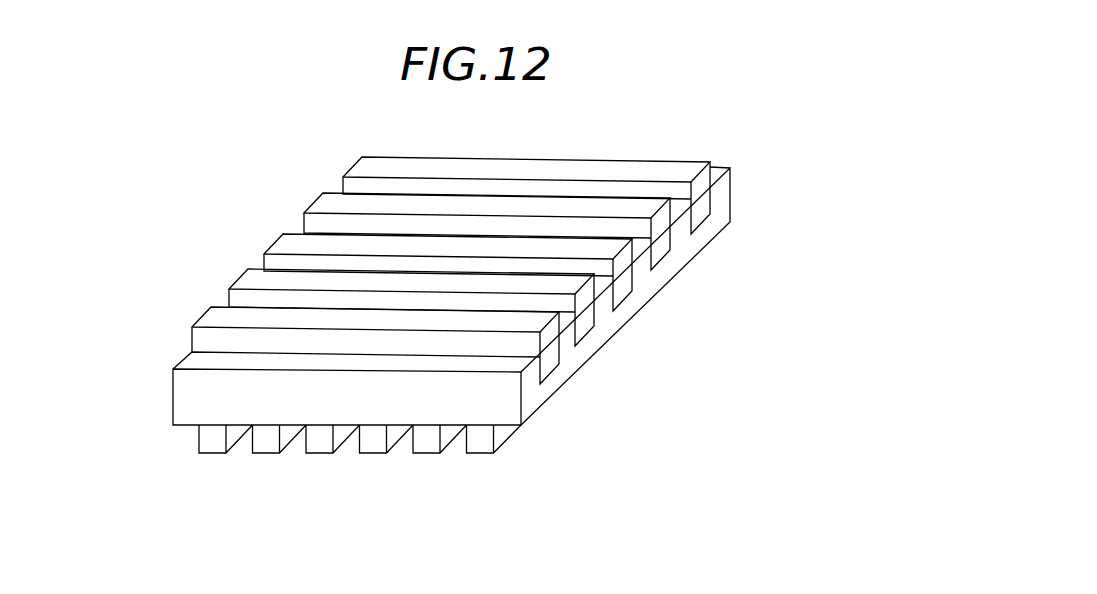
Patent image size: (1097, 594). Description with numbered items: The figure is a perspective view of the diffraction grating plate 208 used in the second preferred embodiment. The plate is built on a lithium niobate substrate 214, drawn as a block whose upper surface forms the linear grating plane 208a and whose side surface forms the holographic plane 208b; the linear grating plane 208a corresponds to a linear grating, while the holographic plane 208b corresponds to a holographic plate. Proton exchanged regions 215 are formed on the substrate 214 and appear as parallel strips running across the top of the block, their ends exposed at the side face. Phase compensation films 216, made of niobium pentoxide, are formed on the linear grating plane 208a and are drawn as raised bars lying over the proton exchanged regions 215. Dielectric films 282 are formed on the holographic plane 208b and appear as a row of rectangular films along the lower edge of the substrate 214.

The diffraction grating plate 208 is at (312, 177).
The linear grating plane 208a is at (183, 358).
The holographic plane 208b is at (601, 352).
The lithium niobate substrate 214 is at (394, 405).
The proton exchanged regions 215 is at (701, 211).
The phase compensation films 216 is at (717, 165).
The dielectric films 282 is at (208, 441).